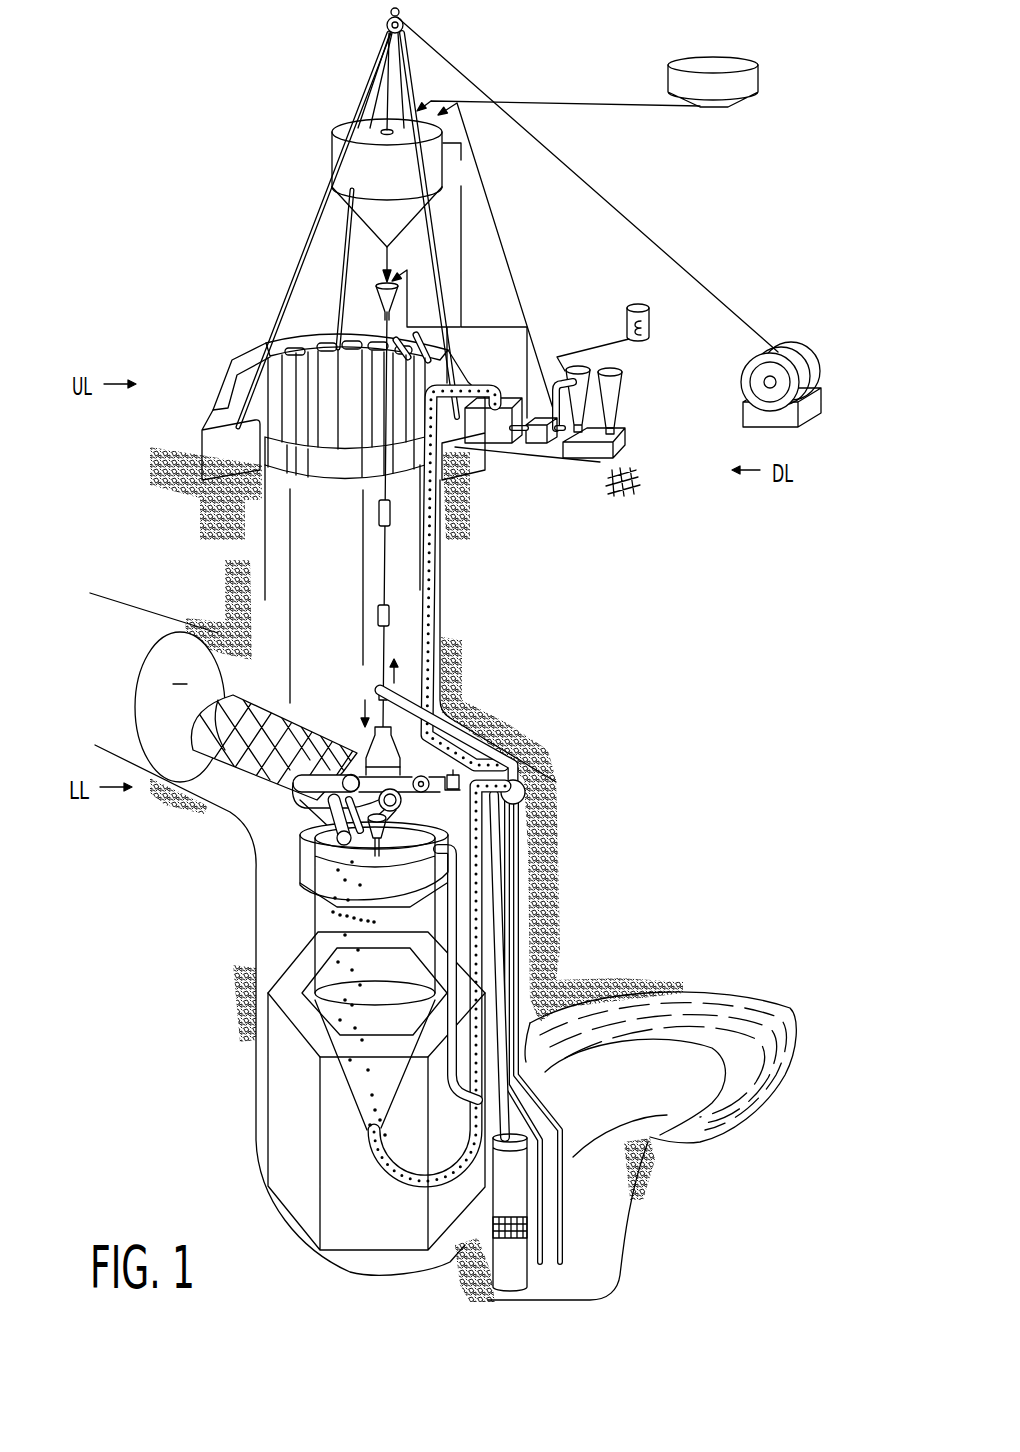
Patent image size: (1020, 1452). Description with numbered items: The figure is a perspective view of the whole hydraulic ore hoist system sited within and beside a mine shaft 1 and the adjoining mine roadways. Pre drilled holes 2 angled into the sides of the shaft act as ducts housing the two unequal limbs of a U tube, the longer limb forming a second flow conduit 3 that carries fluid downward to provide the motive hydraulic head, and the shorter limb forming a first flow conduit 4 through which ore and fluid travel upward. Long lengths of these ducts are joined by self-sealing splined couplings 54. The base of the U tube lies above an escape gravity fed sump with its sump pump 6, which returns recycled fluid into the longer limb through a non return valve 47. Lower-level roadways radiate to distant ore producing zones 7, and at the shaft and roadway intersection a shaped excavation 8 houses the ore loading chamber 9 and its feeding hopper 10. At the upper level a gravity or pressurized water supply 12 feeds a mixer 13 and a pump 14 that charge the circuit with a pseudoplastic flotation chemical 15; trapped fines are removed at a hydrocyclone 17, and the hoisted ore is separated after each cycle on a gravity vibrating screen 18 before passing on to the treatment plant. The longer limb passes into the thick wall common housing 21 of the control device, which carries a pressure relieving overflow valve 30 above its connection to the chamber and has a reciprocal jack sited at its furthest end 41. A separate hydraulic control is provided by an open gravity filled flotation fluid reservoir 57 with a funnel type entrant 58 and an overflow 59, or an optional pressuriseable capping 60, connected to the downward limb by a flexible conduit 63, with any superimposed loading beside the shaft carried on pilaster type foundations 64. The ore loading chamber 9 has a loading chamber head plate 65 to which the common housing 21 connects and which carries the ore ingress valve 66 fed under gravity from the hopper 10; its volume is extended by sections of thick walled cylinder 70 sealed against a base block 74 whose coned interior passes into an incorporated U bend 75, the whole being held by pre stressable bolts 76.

The mine shaft 1 is at (455, 695).
The pre drilled holes 2 is at (348, 498).
The second flow conduit 3 is at (372, 574).
The first flow conduit 4 is at (470, 955).
The sump pump 6 is at (510, 1275).
The ore producing zones 7 is at (180, 707).
The shaped excavation 8 is at (260, 903).
The ore loading chamber 9 is at (332, 918).
The feeding hopper 10 is at (296, 720).
The water supply 12 is at (752, 80).
The mixer 13 is at (638, 328).
The pump 14 is at (510, 397).
The pseudoplastic flotation chemical 15 is at (435, 598).
The hydrocyclone 17 is at (614, 452).
The gravity vibrating screen 18 is at (534, 440).
The common housing 21 is at (505, 740).
The pressure relieving overflow valve 30 is at (398, 835).
The furthest end 41 is at (527, 778).
The non return valve 47 is at (381, 695).
The self-sealing splined couplings 54 is at (378, 617).
The flotation fluid reservoir 57 is at (438, 170).
The funnel type entrant 58 is at (378, 294).
The overflow 59 is at (462, 277).
The pressuriseable capping 60 is at (361, 130).
The flexible conduit 63 is at (382, 254).
The foundations 64 is at (233, 390).
The loading chamber head plate 65 is at (322, 853).
The ore ingress valve 66 is at (322, 838).
The thick walled cylinder 70 is at (285, 978).
The base block 74 is at (352, 1107).
The U bend 75 is at (415, 1185).
The pre stressable bolts 76 is at (312, 933).